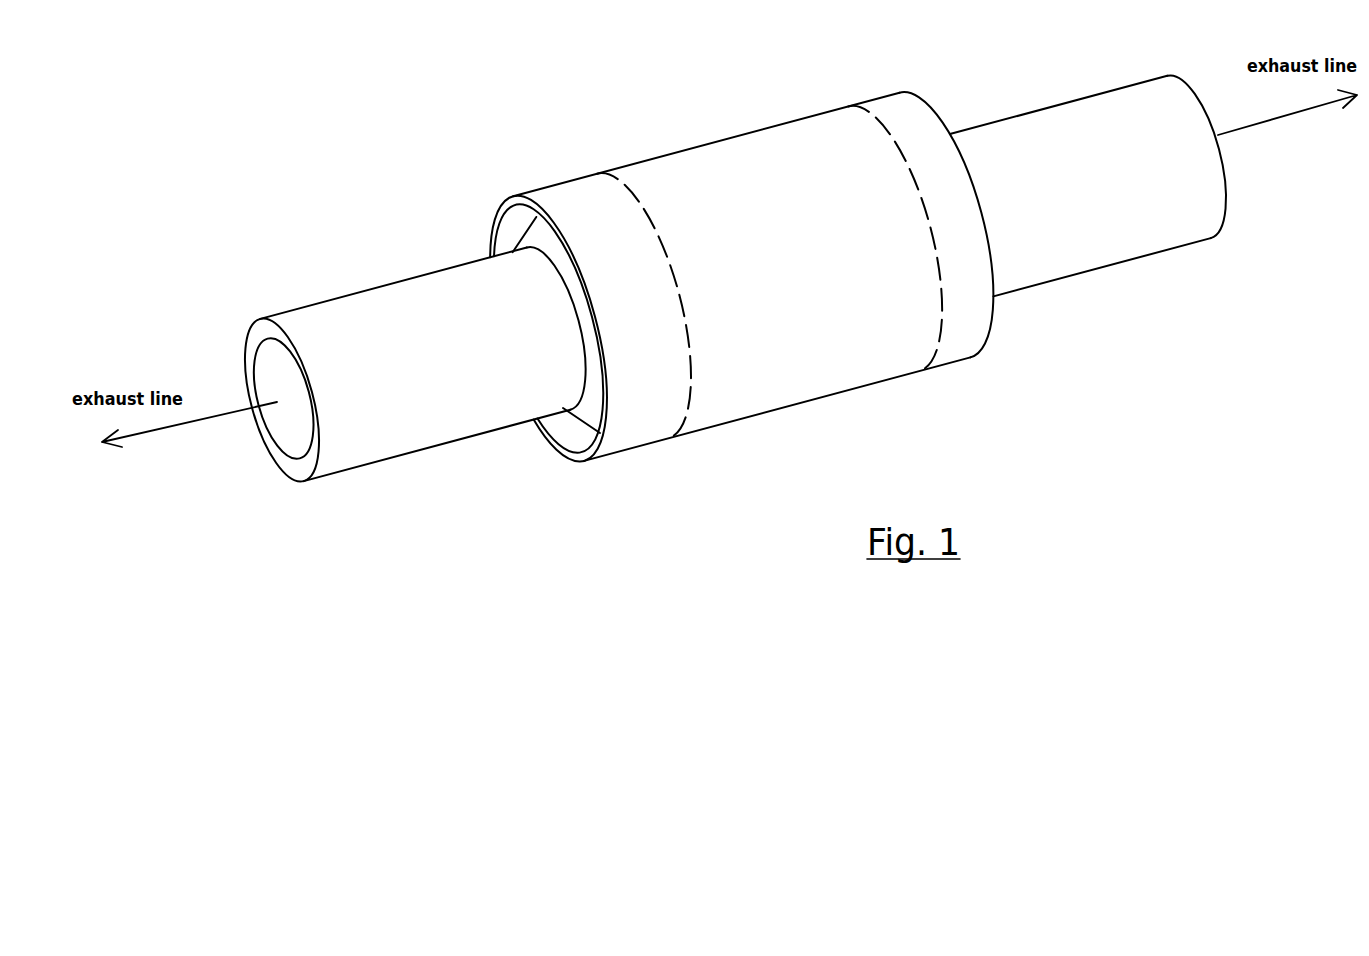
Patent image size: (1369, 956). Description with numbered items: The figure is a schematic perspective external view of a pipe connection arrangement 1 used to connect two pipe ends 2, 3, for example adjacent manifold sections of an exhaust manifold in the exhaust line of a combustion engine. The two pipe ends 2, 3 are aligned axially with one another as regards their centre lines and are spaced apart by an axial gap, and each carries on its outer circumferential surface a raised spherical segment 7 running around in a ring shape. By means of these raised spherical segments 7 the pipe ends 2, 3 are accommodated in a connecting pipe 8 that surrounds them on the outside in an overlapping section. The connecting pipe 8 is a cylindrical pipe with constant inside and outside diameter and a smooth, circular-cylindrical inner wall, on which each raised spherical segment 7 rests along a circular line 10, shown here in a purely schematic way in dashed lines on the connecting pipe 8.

The pipe connection arrangement 1 is at (735, 395).
The pipe end 2 is at (401, 377).
The pipe end 3 is at (1124, 195).
The raised spherical segment 7 is at (588, 405).
The connecting pipe 8 is at (696, 236).
The circular line 10 is at (668, 338).